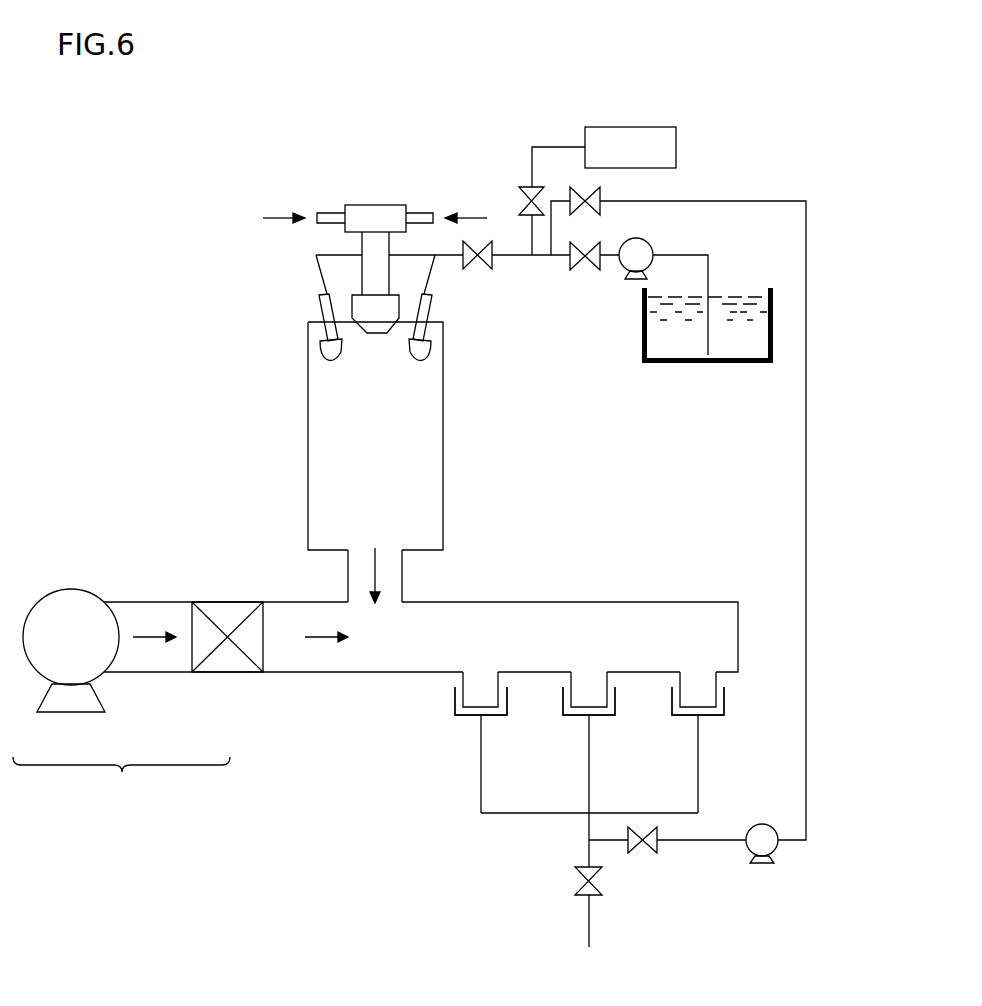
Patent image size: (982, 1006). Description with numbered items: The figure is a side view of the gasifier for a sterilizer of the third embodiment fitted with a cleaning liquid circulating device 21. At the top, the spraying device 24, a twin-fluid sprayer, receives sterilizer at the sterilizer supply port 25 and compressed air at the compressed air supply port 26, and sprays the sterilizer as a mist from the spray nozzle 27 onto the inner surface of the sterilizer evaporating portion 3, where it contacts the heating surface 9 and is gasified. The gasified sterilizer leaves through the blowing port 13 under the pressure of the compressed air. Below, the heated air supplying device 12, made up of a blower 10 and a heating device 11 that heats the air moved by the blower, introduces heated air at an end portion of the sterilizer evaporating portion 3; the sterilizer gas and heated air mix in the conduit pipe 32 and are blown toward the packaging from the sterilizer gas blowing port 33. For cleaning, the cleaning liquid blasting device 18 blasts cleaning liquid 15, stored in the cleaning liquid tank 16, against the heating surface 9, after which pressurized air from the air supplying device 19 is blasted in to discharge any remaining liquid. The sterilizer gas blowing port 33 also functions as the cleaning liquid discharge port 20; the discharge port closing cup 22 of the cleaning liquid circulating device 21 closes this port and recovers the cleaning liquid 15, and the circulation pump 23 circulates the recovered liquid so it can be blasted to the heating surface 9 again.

The sterilizer evaporating portion 3 is at (471, 372).
The heating surface 9 is at (443, 433).
The blower 10 is at (72, 589).
The heating device 11 is at (227, 673).
The heated air supplying device 12 is at (121, 782).
The blowing port 13 is at (402, 583).
The cleaning liquid 15 is at (732, 297).
The cleaning liquid tank 16 is at (642, 328).
The cleaning liquid blasting device 18 is at (322, 306).
The air supplying device 19 is at (630, 127).
The cleaning liquid discharge port 20 is at (589, 701).
The cleaning liquid circulating device 21 is at (689, 885).
The discharge port closing cup 22 is at (459, 717).
The circulation pump 23 is at (779, 848).
The spraying device 24 is at (377, 205).
The sterilizer supply port 25 is at (330, 213).
The compressed air supply port 26 is at (419, 213).
The spray nozzle 27 is at (376, 334).
The conduit pipe 32 is at (374, 649).
The sterilizer gas blowing port 33 is at (462, 697).